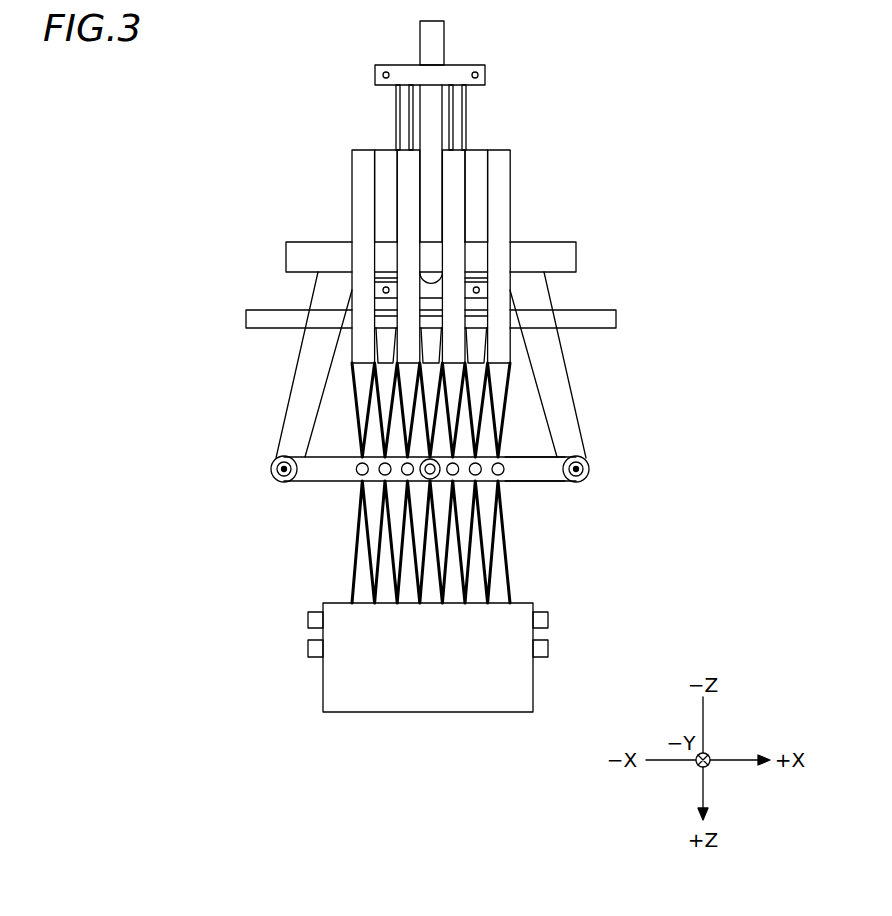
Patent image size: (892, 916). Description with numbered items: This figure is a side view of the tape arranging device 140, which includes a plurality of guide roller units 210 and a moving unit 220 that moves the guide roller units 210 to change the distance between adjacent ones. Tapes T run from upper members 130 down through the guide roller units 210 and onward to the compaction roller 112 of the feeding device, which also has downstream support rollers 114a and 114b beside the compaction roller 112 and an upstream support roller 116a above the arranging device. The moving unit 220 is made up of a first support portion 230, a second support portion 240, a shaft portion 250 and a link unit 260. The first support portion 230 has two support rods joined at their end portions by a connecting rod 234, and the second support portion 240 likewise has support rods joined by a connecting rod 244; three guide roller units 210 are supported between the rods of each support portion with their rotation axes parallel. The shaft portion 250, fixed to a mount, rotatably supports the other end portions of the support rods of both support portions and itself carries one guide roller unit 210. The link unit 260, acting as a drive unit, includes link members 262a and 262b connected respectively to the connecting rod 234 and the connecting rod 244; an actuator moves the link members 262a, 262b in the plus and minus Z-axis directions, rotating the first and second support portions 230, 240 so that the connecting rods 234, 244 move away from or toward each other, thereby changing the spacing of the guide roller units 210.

The compaction roller 112 is at (428, 712).
The downstream support roller 114a is at (549, 620).
The downstream support roller 114b is at (549, 648).
The upstream support roller 116a is at (620, 318).
The support columns 130 is at (397, 150).
The tape arranging device 140 is at (217, 338).
The guide roller units 210 is at (350, 457).
The moving unit 220 is at (444, 487).
The first support portion 230 is at (318, 472).
The connecting rod 234 is at (271, 470).
The second support portion 240 is at (530, 473).
The connecting rod 244 is at (590, 473).
The shaft portion 250 is at (440, 482).
The link unit 260 is at (435, 365).
The link member 262a is at (292, 384).
The link member 262b is at (585, 425).
The threads T is at (507, 394).